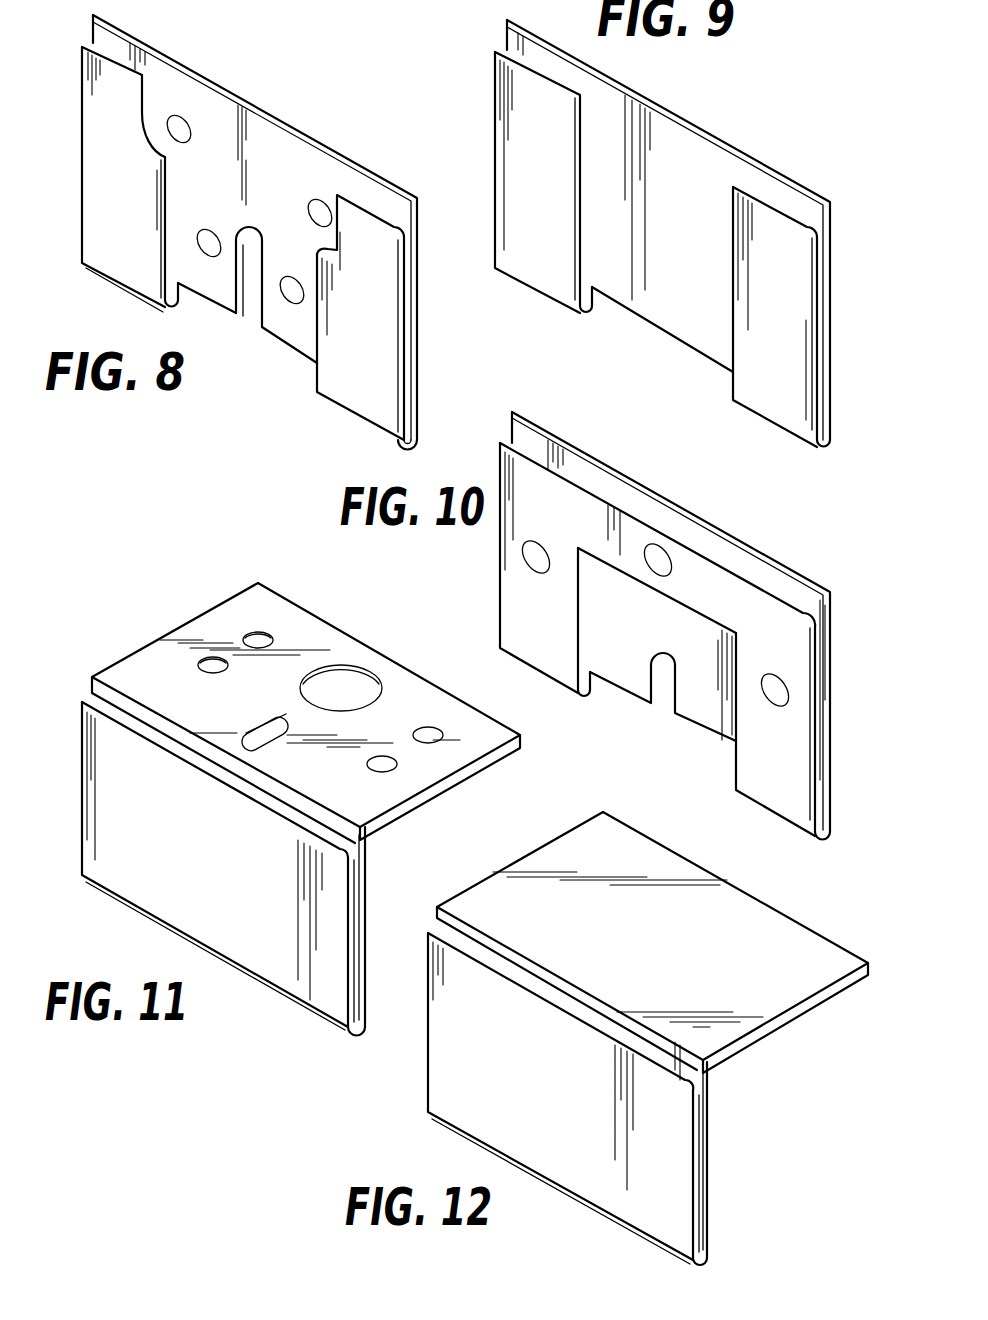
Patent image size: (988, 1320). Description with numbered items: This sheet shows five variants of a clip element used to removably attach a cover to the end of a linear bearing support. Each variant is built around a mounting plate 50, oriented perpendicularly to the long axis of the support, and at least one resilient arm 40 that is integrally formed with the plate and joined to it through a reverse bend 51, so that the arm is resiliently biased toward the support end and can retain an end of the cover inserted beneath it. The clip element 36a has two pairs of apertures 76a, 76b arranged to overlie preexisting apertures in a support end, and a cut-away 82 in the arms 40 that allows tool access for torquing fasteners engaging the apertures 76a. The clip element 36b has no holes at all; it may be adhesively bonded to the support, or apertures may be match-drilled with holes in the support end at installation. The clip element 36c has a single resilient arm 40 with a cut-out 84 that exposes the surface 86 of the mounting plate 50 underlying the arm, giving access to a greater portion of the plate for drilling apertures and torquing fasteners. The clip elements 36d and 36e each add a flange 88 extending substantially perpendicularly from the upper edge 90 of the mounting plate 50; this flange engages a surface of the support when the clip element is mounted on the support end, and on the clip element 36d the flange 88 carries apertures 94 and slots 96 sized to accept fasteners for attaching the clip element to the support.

In FIG. 8, the clip element 36a is at (301, 382).
In FIG. 9, the clip element 36b is at (670, 352).
In FIG. 10, the clip element 36c is at (662, 724).
In FIG. 11, the clip element 36d is at (143, 928).
In FIG. 12, the clip element 36e is at (460, 1148).
In FIG. 8, the resilient arm 40 is at (110, 253).
In FIG. 9, the resilient arm 40 is at (552, 277).
In FIG. 10, the resilient arm 40 is at (800, 708).
In FIG. 11, the resilient arm 40 is at (303, 990).
In FIG. 12, the resilient arm 40 is at (590, 1185).
In FIG. 8, the mounting plate 50 is at (382, 195).
In FIG. 9, the mounting plate 50 is at (735, 173).
In FIG. 10, the mounting plate 50 is at (760, 568).
In FIG. 11, the mounting plate 50 is at (367, 893).
In FIG. 12, the mounting plate 50 is at (708, 1147).
In FIG. 8, the reverse bend 51 is at (165, 308).
In FIG. 9, the reverse bend 51 is at (587, 310).
In FIG. 10, the reverse bend 51 is at (822, 835).
In FIG. 11, the reverse bend 51 is at (350, 1033).
In FIG. 12, the reverse bend 51 is at (706, 1258).
In FIG. 8, the apertures 76a is at (183, 117).
In FIG. 8, the apertures 76b is at (213, 263).
In FIG. 8, the cut-away 82 is at (142, 134).
In FIG. 10, the cut-out 84 is at (617, 663).
In FIG. 10, the surface of mounting plate 86 is at (723, 735).
In FIG. 11, the flange 88 is at (447, 763).
In FIG. 12, the flange 88 is at (787, 997).
In FIG. 11, the upper edge 90 is at (273, 788).
In FIG. 12, the upper edge 90 is at (590, 1003).
In FIG. 11, the apertures 94 is at (268, 635).
In FIG. 11, the slots 96 is at (248, 733).